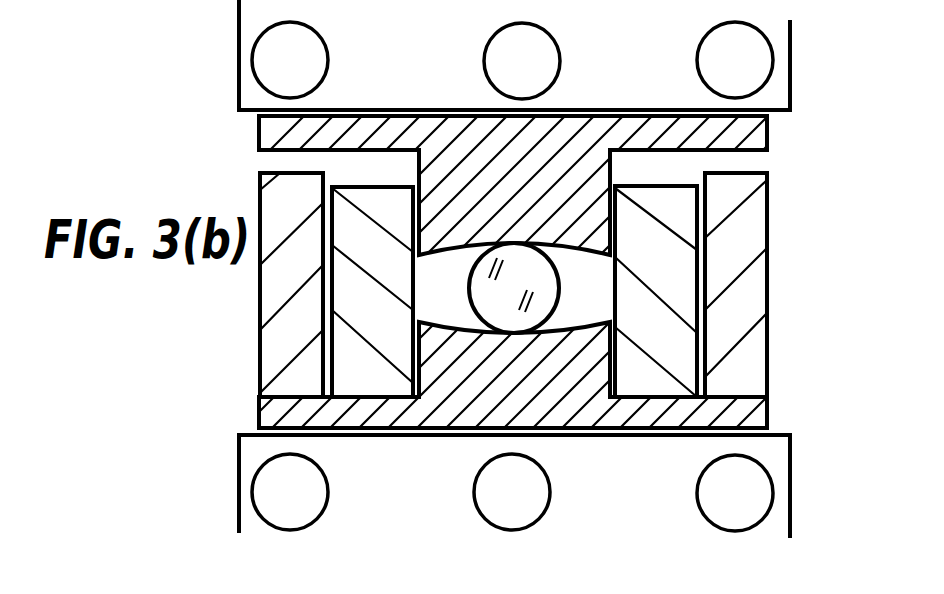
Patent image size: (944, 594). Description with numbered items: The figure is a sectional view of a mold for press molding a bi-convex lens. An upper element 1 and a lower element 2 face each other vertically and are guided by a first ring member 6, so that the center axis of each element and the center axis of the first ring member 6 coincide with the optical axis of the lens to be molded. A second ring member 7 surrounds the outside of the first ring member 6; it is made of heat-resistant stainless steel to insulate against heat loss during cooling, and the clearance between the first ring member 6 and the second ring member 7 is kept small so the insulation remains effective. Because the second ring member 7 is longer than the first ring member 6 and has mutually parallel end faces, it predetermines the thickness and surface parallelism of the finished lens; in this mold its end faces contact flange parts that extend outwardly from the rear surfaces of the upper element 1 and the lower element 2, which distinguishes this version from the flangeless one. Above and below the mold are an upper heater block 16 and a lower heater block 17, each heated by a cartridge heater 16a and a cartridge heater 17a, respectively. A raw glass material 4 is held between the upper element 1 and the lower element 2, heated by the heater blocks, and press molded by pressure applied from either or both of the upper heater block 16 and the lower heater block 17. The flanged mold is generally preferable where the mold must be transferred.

The upper element 1 is at (757, 137).
The lower element 2 is at (758, 415).
The raw glass material 4 is at (527, 315).
The first ring member 6 is at (683, 260).
The second ring member 7 is at (760, 313).
The upper heater block 16 is at (790, 80).
The cartridge heater 16a is at (752, 43).
The lower heater block 17 is at (782, 470).
The cartridge heater 17a is at (770, 510).